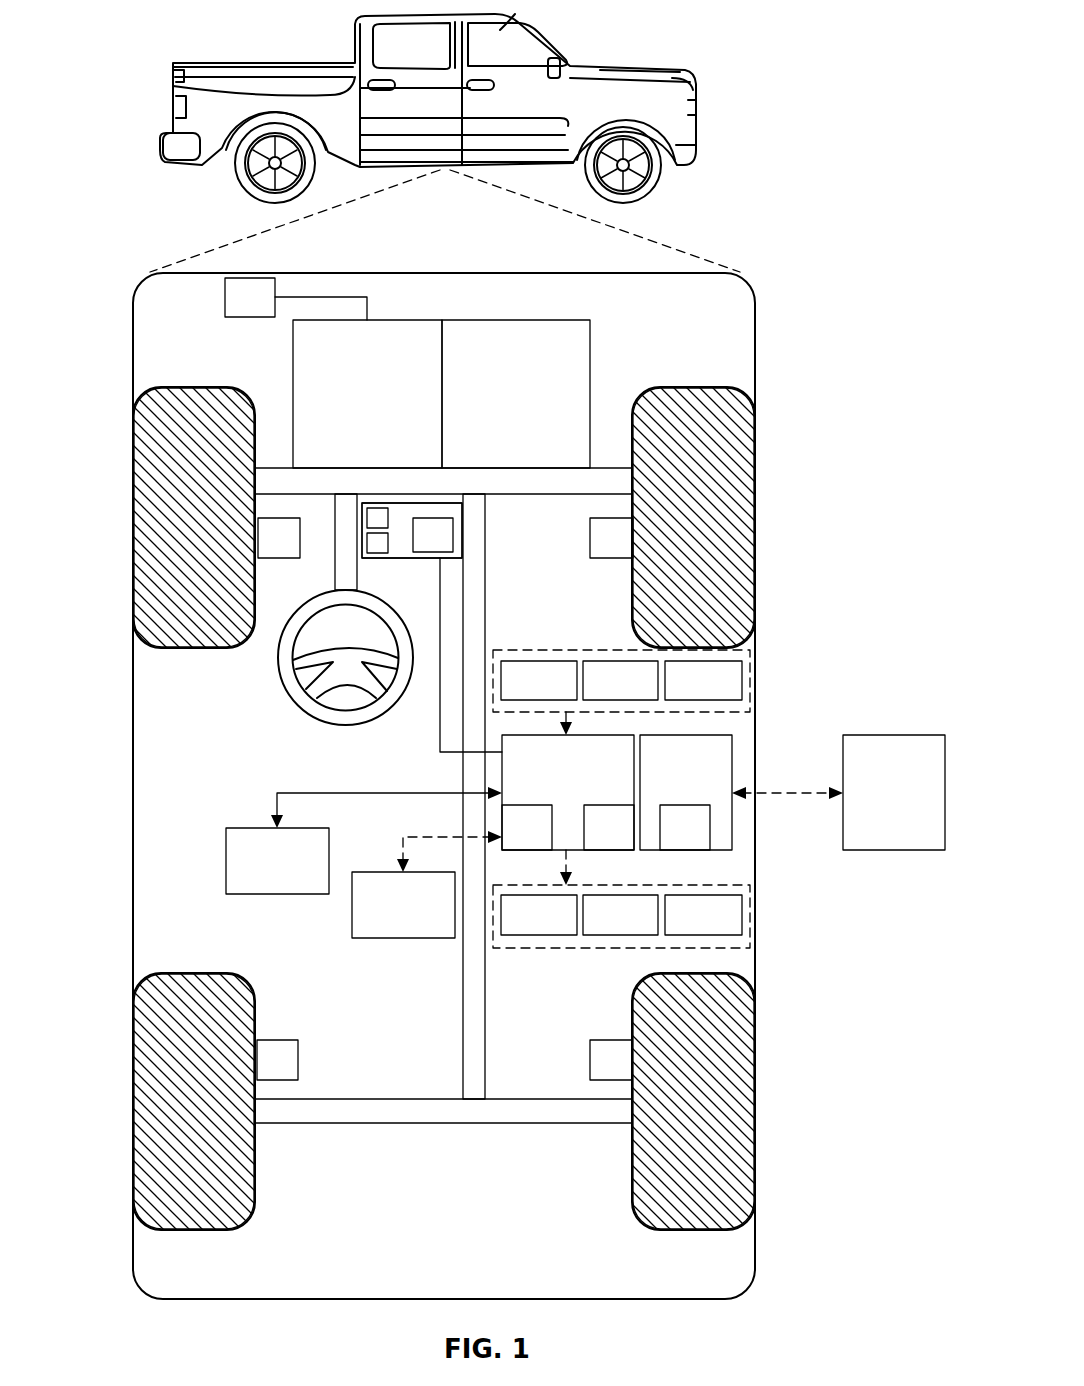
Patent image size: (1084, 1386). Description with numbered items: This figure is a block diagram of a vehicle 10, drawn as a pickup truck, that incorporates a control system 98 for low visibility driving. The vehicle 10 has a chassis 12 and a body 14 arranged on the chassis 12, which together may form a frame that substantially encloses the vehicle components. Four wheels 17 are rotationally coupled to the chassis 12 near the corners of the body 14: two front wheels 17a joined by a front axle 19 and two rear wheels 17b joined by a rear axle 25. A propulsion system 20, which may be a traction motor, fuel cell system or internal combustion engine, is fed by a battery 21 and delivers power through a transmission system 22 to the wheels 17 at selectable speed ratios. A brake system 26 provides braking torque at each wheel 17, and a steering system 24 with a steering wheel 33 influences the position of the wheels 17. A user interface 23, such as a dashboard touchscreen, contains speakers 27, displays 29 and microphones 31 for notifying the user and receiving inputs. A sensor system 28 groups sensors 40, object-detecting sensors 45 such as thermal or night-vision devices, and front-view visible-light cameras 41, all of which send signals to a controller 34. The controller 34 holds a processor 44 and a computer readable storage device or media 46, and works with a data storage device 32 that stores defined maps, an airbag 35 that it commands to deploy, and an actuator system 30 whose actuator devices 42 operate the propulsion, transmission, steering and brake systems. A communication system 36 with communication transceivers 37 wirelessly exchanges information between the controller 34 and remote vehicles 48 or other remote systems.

The vehicle 10 is at (637, 60).
The chassis 12 is at (465, 972).
The body 14 is at (132, 748).
The front and rear wheels 17 is at (195, 387).
The front wheels 17a is at (160, 505).
The rear wheels 17b is at (155, 1097).
The front axle 19 is at (557, 497).
The propulsion system 20 is at (354, 407).
The battery 21 is at (255, 278).
The transmission system 22 is at (503, 407).
The user interface 23 is at (422, 500).
The steering system 24 is at (375, 573).
The rear axle 25 is at (519, 1099).
The brake system 26 is at (266, 550).
The speakers 27 is at (376, 506).
The sensor system 28 is at (580, 647).
The displays 29 is at (367, 545).
The actuator system 30 is at (583, 957).
The microphones 31 is at (421, 548).
The data storage device 32 is at (390, 916).
The steering wheel 33 is at (282, 668).
The controller 34 is at (555, 784).
The airbags 35 is at (264, 872).
The communication system 36 is at (673, 784).
The communication transceivers 37 is at (672, 839).
The sensors 40 is at (526, 692).
The front-view visible-light cameras 41 is at (690, 692).
The actuator devices 42 is at (526, 927).
The processor 44 is at (514, 839).
The object-detecting sensors 45 is at (607, 692).
The computer readable storage device or media 46 is at (596, 839).
The remote vehicles 48 is at (881, 805).
The control system 98 is at (408, 768).